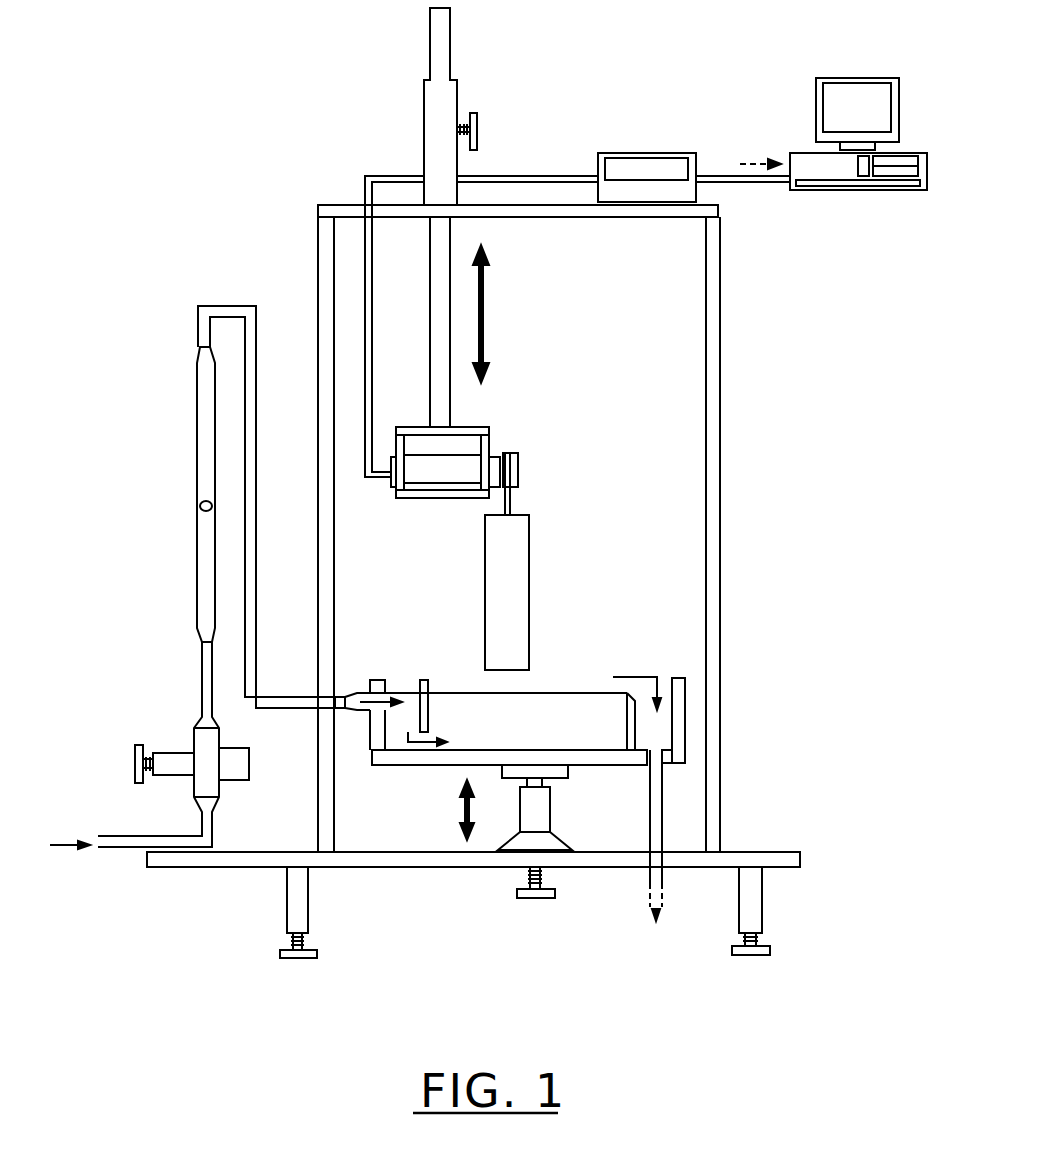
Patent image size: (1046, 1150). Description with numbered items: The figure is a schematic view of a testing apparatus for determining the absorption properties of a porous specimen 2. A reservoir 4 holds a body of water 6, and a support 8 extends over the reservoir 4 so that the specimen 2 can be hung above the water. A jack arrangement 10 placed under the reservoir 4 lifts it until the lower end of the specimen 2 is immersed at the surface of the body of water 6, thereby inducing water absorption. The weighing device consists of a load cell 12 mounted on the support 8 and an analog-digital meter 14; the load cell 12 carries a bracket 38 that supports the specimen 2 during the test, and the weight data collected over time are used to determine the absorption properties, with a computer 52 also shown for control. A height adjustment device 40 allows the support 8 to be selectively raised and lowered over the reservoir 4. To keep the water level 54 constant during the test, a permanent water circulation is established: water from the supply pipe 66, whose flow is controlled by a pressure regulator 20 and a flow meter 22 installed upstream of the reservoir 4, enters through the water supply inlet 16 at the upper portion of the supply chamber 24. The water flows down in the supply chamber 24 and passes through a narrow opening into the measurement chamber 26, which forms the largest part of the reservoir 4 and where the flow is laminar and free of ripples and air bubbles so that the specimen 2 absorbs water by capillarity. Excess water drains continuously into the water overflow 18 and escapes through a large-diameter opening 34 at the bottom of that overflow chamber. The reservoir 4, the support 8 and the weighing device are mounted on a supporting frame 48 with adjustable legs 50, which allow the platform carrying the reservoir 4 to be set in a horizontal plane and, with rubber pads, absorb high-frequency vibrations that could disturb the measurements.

The porous specimen 2 is at (485, 563).
The reservoir 4 is at (434, 782).
The body of water 6 is at (462, 700).
The support 8 is at (417, 515).
The jack arrangement 10 is at (585, 826).
The load cell 12 is at (520, 471).
The analog-digital meter 14 is at (632, 155).
The water supply inlet 16 is at (367, 712).
The water overflow 18 is at (661, 668).
The pressure regulator 20 is at (202, 752).
The flow meter 22 is at (203, 443).
The supply chamber 24 is at (395, 670).
The measurement chamber 26 is at (592, 676).
The opening 34 is at (655, 750).
The bracket 38 is at (511, 502).
The height adjustment device 40 is at (403, 124).
The supporting frame 48 is at (778, 855).
The adjustable legs 50 is at (293, 900).
The computer 52 is at (855, 78).
The water level 54 is at (548, 692).
The supply pipe 66 is at (233, 312).